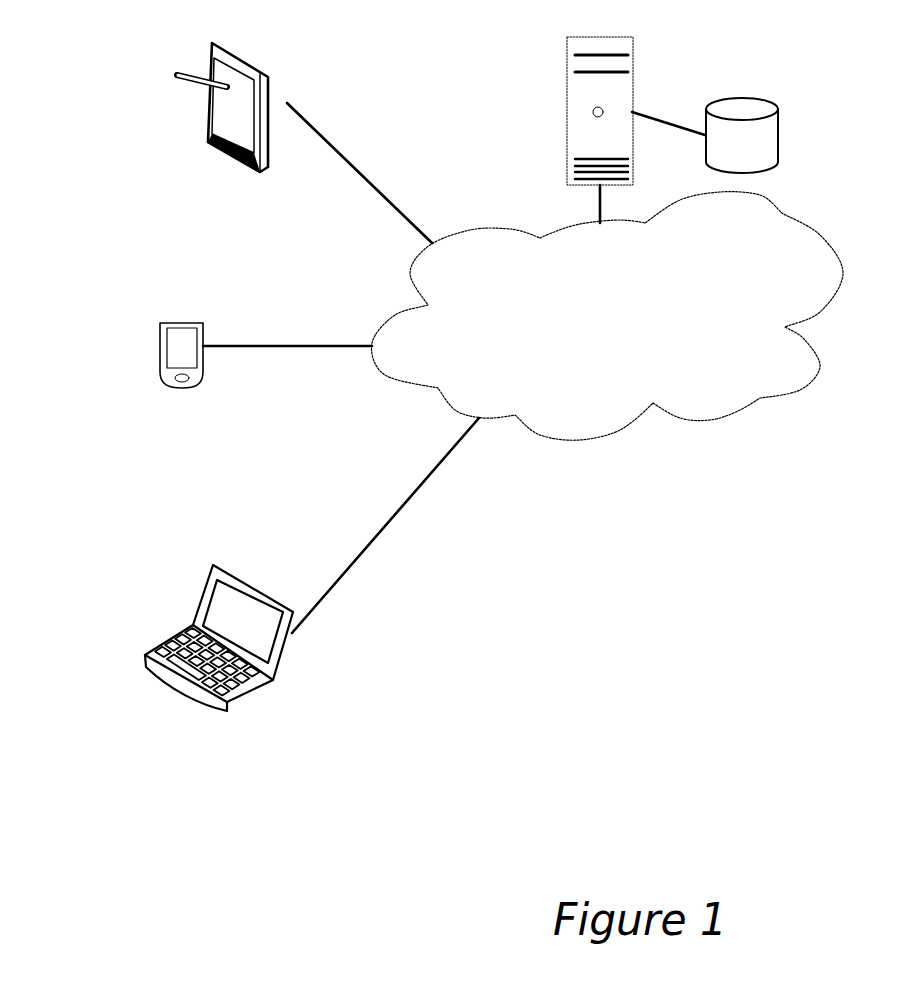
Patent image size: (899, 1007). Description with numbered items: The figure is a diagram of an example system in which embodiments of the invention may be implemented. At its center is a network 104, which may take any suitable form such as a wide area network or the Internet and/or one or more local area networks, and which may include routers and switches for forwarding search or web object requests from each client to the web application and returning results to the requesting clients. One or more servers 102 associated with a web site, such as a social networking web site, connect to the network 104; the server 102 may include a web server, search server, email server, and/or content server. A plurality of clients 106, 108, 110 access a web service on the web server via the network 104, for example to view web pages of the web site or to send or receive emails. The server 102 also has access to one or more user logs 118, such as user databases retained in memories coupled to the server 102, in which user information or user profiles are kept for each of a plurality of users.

The server 102 is at (637, 63).
The network 104 is at (607, 316).
The client 106 is at (172, 87).
The client 108 is at (152, 340).
The client 110 is at (172, 622).
The user log 118 is at (790, 135).